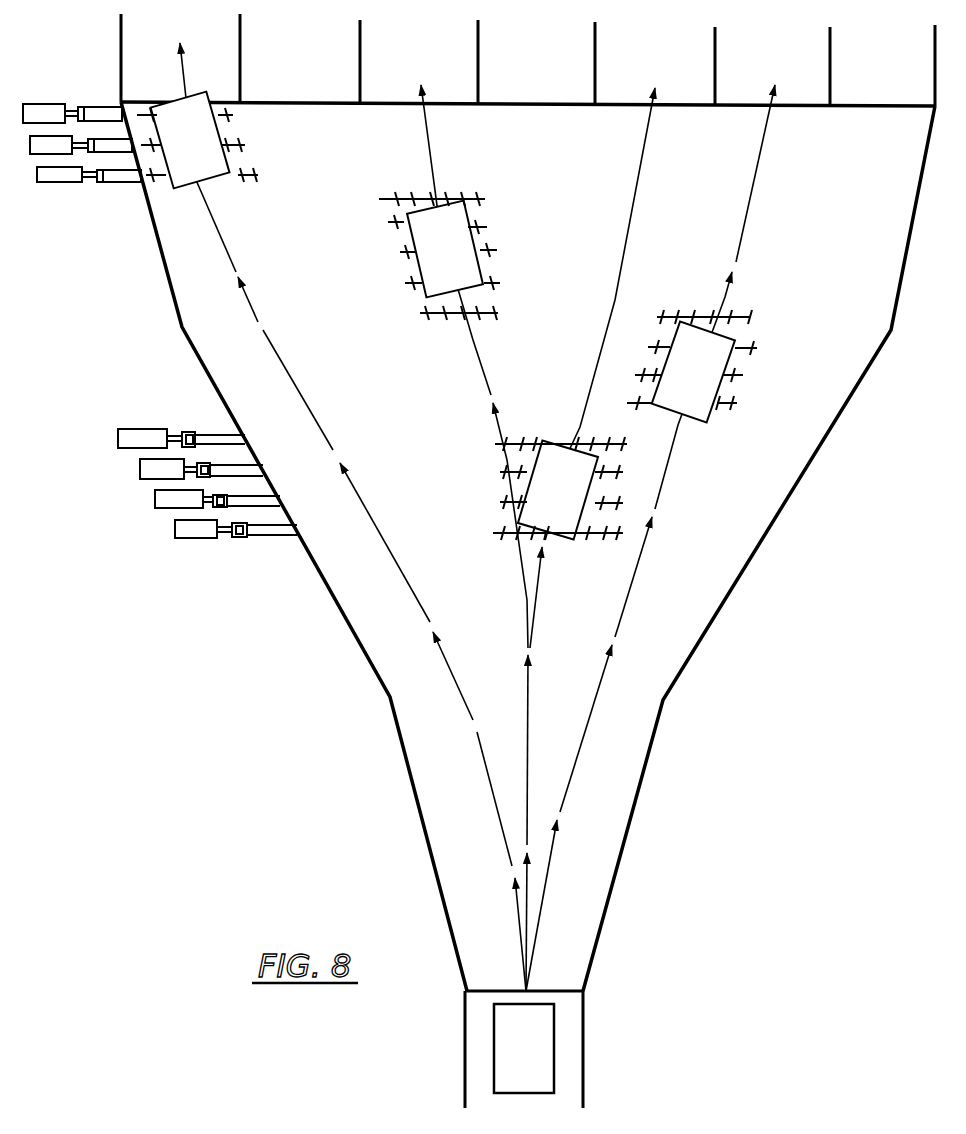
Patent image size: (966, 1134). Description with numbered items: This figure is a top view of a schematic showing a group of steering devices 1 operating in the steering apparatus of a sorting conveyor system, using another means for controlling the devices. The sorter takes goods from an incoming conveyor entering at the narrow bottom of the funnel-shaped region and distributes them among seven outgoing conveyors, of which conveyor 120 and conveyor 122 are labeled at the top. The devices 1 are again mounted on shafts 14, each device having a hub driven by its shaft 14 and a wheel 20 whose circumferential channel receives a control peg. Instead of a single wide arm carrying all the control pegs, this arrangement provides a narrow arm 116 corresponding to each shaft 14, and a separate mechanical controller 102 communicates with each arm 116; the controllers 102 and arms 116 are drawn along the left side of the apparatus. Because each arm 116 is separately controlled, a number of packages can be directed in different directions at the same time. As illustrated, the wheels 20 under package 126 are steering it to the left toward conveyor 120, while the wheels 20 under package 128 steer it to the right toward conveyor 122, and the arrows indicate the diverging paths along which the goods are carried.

The device 1 is at (455, 184).
The hexagonal shaft 14 is at (258, 180).
The wheel 20 is at (247, 143).
The mechanical controller 102 is at (40, 104).
The narrow arm 116 is at (99, 107).
The conveyor 120 is at (224, 33).
The conveyor 122 is at (674, 51).
The package 126 is at (207, 149).
The package 128 is at (571, 495).